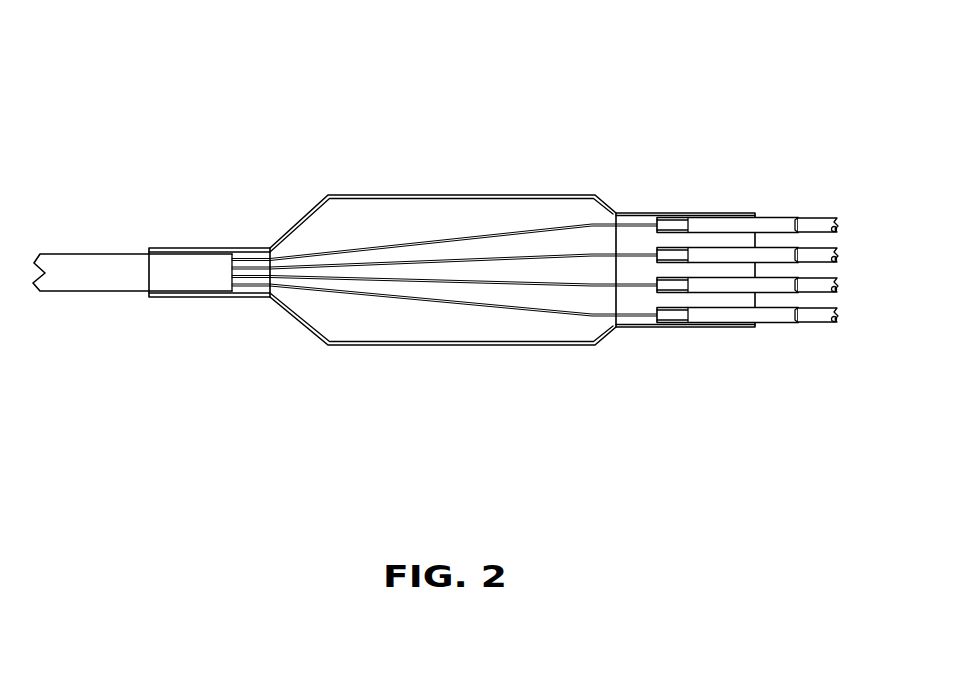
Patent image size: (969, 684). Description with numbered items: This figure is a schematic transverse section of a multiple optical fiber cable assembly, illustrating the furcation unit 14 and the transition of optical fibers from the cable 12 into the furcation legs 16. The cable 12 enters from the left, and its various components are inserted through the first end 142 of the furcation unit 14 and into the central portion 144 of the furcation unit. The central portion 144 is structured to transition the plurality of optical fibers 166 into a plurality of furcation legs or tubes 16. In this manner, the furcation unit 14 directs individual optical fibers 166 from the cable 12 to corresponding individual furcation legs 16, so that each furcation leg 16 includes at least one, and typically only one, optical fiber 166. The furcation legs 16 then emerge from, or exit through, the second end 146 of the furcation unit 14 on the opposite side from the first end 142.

The furcation unit 14 is at (379, 98).
The cable 12 is at (115, 252).
The first end 142 is at (203, 323).
The central portion 144 is at (457, 375).
The optical fibers 166 is at (540, 255).
The second end 146 is at (690, 352).
The furcation legs 16 is at (818, 212).